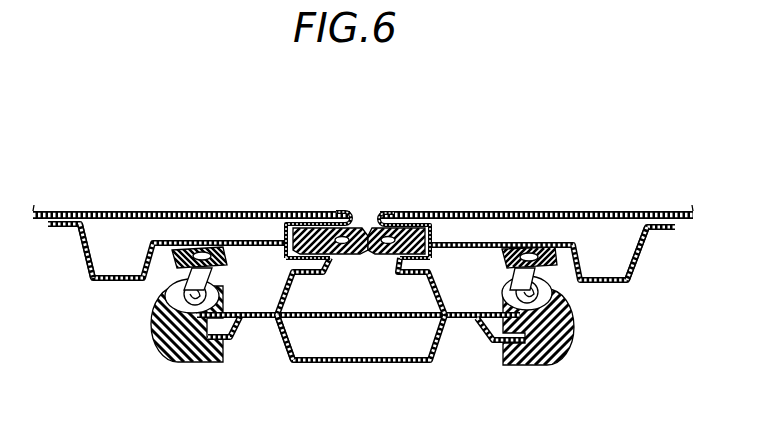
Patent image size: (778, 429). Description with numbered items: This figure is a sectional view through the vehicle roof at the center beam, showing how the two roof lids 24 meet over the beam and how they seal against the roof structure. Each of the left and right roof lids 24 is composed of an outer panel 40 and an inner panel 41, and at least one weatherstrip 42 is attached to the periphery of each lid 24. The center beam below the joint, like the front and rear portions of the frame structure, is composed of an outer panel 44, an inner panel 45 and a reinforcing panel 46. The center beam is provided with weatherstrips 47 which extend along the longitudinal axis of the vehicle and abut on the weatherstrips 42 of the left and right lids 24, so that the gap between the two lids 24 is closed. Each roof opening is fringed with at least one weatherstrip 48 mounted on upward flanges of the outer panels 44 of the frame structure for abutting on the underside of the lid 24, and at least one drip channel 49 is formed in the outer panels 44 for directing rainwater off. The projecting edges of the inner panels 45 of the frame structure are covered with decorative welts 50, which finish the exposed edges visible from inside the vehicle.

The roof lid 24 is at (179, 203).
The outer panel 40 is at (90, 220).
The inner panel 41 is at (80, 232).
The weatherstrip 42 is at (297, 218).
The outer panel 44 is at (438, 286).
The inner panel 45 is at (422, 362).
The reinforcing panel 46 is at (312, 318).
The weatherstrip 47 is at (358, 226).
The weatherstrip 48 is at (173, 253).
The drip channel 49 is at (252, 292).
The decorative welt 50 is at (173, 363).